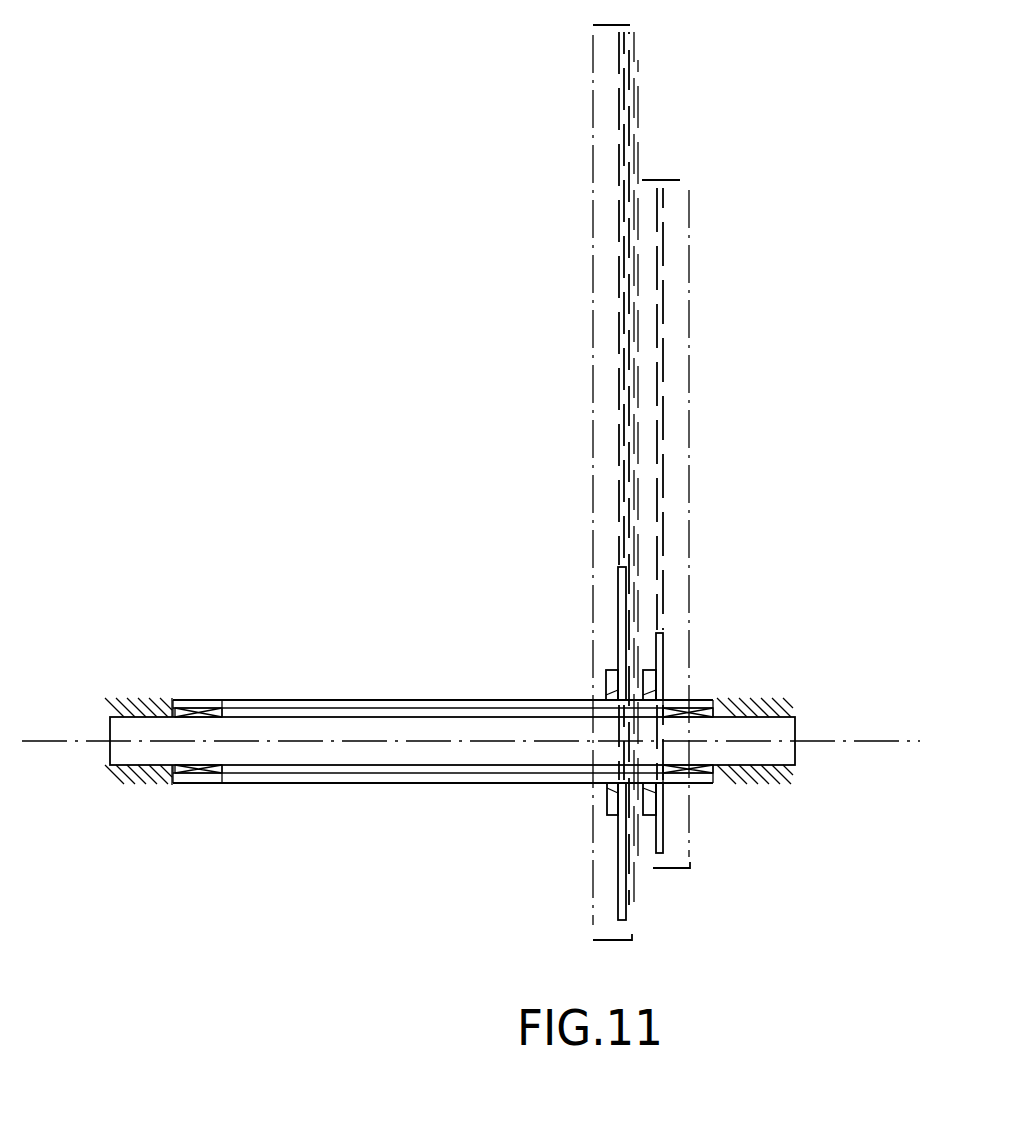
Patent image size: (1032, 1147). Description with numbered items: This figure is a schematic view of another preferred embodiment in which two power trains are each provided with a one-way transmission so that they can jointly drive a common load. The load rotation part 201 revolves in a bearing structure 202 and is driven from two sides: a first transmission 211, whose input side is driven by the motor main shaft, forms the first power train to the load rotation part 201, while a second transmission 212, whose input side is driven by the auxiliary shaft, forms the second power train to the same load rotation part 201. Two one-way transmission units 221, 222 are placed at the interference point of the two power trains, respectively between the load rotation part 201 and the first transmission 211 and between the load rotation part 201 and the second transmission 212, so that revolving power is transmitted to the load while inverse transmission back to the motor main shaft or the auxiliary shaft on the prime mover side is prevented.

The load rotation part 201 is at (353, 700).
The bearing structure 202 is at (430, 742).
The first transmission 211 is at (593, 430).
The second transmission 212 is at (690, 367).
The one-way transmission unit 221 is at (607, 695).
The one-way transmission unit 222 is at (663, 697).